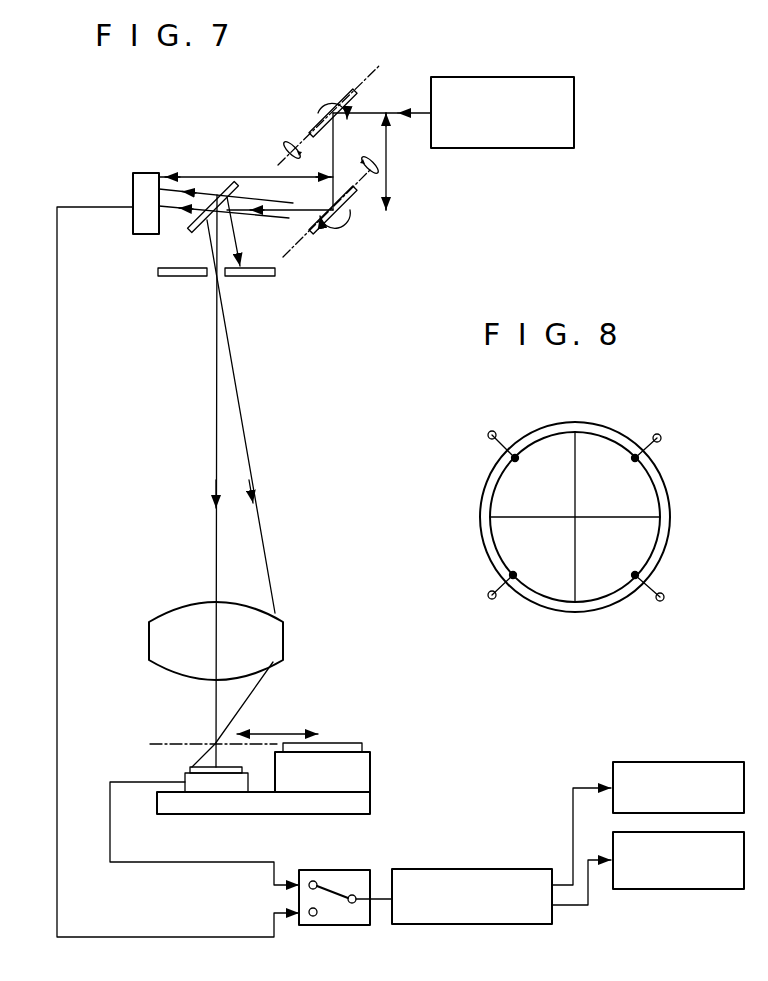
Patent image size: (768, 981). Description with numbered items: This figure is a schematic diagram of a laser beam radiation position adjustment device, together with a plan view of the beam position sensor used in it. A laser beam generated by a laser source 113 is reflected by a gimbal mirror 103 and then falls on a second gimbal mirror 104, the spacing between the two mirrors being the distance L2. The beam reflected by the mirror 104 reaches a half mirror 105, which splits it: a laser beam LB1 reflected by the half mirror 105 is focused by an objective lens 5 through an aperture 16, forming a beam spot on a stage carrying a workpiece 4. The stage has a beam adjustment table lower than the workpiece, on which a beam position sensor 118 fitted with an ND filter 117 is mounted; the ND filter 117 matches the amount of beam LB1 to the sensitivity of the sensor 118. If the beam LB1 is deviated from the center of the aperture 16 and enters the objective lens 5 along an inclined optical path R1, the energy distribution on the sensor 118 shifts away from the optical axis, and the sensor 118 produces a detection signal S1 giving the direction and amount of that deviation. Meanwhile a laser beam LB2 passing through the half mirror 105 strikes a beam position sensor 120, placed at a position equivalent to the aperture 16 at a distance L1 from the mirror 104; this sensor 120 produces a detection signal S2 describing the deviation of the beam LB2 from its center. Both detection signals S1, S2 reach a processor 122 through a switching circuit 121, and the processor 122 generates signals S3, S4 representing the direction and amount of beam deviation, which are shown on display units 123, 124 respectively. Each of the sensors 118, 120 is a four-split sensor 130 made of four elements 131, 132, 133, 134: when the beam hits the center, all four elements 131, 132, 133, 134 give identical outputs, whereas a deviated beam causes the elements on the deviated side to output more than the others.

In FIG. 7, the gimbal mirror 103 is at (350, 100).
In FIG. 7, the gimbal mirror 104 is at (340, 224).
In FIG. 7, the half mirror 105 is at (190, 230).
In FIG. 7, the laser source 113 is at (518, 77).
In FIG. 7, the beam position sensor 120 is at (145, 172).
In FIG. 7, the aperture 16 is at (224, 276).
In FIG. 7, the objective lens 5 is at (170, 622).
In FIG. 7, the workpiece 4 is at (338, 743).
In FIG. 7, the ND filter 117 is at (192, 765).
In FIG. 7, the beam position sensor 118 is at (188, 783).
In FIG. 7, the switching circuit 121 is at (347, 876).
In FIG. 7, the processor 122 is at (462, 870).
In FIG. 7, the display unit 123 is at (628, 762).
In FIG. 7, the display unit 124 is at (637, 889).
In FIG. 8, the four-split sensor 130 is at (628, 428).
In FIG. 8, the element 131 is at (631, 505).
In FIG. 8, the element 132 is at (631, 561).
In FIG. 8, the element 133 is at (558, 561).
In FIG. 8, the element 134 is at (556, 505).
In FIG. 7, the distance from mirror to beam position sensor L1 is at (259, 177).
In FIG. 7, the distance between mirrors L2 is at (389, 163).
In FIG. 7, the laser beam LB1 is at (215, 432).
In FIG. 7, the laser beam LB2 is at (170, 203).
In FIG. 7, the optical path R1 is at (244, 430).
In FIG. 7, the detection signal S1 is at (110, 833).
In FIG. 7, the detection signal S2 is at (57, 833).
In FIG. 7, the signal S3 is at (573, 810).
In FIG. 7, the signal S4 is at (587, 862).